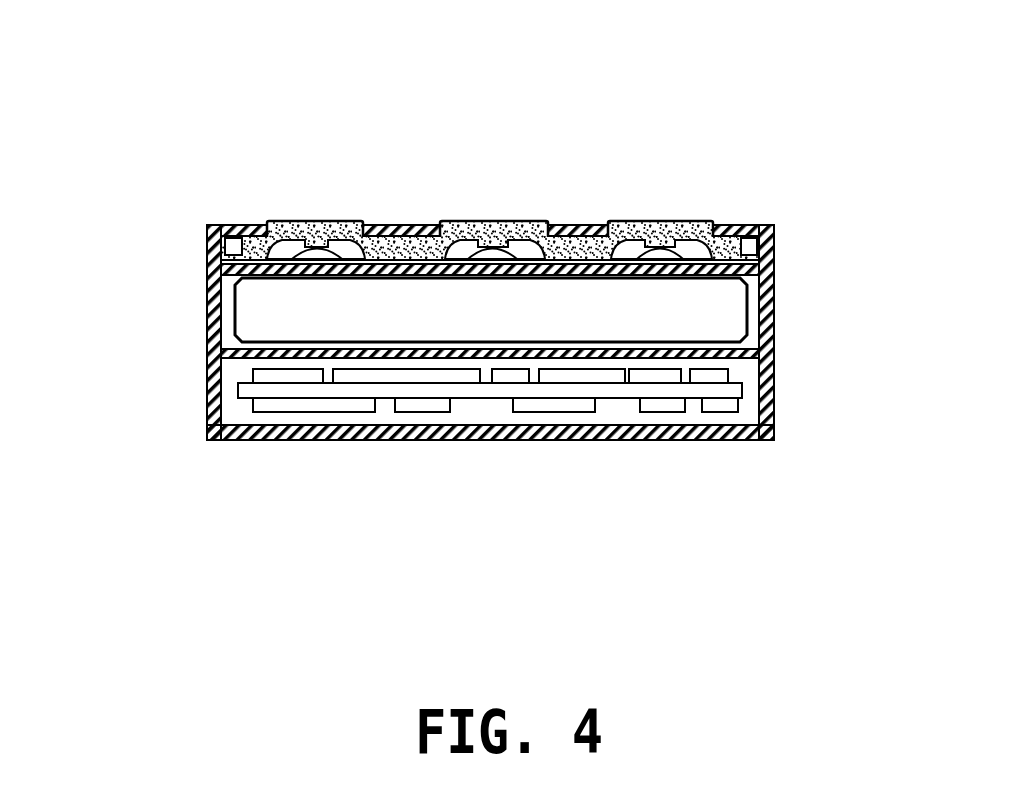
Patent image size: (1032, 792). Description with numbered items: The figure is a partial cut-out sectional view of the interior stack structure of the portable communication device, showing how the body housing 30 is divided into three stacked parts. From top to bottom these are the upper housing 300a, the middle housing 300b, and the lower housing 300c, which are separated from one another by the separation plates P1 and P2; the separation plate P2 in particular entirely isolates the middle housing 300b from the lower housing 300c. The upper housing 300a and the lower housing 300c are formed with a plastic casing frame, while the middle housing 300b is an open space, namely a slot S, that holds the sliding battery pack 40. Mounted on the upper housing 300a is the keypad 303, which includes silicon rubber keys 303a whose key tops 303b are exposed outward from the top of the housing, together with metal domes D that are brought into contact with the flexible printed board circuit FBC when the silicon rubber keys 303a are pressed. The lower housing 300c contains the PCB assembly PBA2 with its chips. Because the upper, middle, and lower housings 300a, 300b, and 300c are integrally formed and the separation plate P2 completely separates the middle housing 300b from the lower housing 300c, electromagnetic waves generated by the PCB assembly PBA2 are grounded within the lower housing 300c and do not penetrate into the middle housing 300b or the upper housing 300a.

The body housing 30 is at (470, 278).
The sliding battery pack 40 is at (307, 310).
The metal domes D is at (305, 251).
The separation plate P1 is at (400, 276).
The separation plate P2 is at (603, 352).
The flexible printed board circuit FBC is at (442, 223).
The slot S is at (775, 280).
The PCB assembly PBA2 is at (483, 412).
The upper housing 300a is at (564, 170).
The middle housing 300b is at (567, 412).
The lower housing 300c is at (775, 387).
The keypad 303 is at (492, 134).
The silicon rubber keys 303a is at (530, 220).
The key tops 303b is at (490, 219).